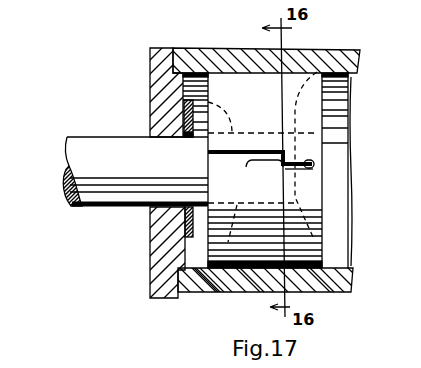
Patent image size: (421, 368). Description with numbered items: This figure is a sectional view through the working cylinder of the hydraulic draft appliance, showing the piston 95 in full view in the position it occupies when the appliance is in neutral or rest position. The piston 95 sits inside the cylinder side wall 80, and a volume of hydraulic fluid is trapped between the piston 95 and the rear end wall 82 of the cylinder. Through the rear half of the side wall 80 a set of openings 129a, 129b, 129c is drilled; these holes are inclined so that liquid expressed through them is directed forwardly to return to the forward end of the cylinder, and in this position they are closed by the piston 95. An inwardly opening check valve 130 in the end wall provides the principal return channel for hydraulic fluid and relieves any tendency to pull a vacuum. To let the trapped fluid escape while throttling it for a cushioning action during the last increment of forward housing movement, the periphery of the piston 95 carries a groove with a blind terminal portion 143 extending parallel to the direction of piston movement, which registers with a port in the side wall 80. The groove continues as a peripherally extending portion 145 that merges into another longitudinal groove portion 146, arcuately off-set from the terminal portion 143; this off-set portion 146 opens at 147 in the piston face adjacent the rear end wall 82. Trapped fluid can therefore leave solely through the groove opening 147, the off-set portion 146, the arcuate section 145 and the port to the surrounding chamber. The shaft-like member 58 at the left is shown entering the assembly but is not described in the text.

The rear end wall 82 is at (160, 47).
The side wall 80 is at (314, 50).
The piston 95 is at (317, 135).
The opening 129a is at (228, 293).
The opening 129b is at (267, 293).
The opening 129c is at (327, 292).
The shaft 58 is at (67, 175).
The check valve 130 is at (213, 103).
The groove opening 147 is at (208, 152).
The longitudinal groove portion 146 is at (247, 163).
The peripherally extending groove portion 145 is at (350, 155).
The blind terminal portion of groove 143 is at (306, 168).